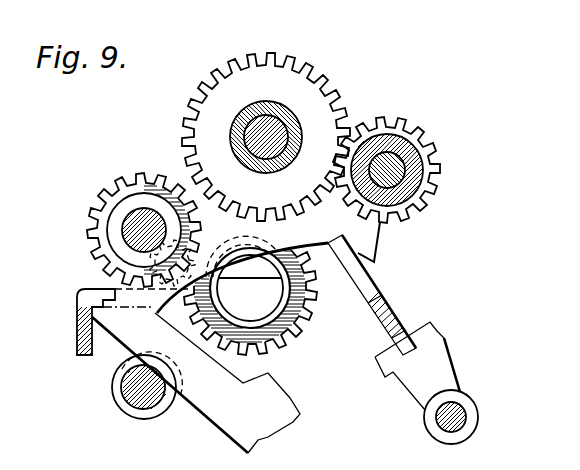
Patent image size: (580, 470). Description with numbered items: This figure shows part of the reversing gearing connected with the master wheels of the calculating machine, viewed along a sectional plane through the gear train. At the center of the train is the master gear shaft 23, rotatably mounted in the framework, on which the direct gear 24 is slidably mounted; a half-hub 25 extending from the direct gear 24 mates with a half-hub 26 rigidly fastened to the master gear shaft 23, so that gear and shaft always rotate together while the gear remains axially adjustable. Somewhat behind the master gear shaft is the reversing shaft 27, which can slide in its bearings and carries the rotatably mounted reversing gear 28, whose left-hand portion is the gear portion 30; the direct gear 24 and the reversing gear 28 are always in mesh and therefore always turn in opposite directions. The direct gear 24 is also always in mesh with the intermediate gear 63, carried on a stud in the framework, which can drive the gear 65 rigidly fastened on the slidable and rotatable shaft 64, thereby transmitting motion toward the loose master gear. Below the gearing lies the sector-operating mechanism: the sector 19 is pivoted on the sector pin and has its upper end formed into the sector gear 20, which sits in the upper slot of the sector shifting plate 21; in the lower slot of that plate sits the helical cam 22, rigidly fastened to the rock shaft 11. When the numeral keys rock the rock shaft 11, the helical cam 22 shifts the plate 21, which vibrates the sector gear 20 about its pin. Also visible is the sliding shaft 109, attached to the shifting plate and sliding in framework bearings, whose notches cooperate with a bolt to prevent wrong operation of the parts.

The direct gear 24 is at (267, 118).
The master gear shaft 23 is at (292, 110).
The half-hub 25 is at (281, 117).
The half-hub 26 is at (250, 127).
The reversing shaft 27 is at (390, 173).
The reversing gear 28 is at (400, 147).
The gear portion 30 is at (412, 157).
The gear 65 is at (128, 186).
The shaft 64 is at (127, 230).
The gear 63 is at (297, 323).
The sliding shaft 109 is at (147, 395).
The sector 19 is at (300, 416).
The sector gear 20 is at (376, 247).
The sector shifting plate 21 is at (390, 341).
The helical cam 22 is at (429, 327).
The rock shaft 11 is at (453, 408).